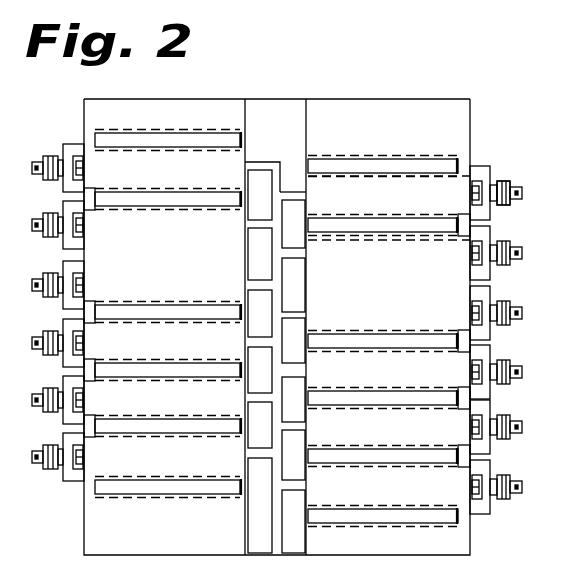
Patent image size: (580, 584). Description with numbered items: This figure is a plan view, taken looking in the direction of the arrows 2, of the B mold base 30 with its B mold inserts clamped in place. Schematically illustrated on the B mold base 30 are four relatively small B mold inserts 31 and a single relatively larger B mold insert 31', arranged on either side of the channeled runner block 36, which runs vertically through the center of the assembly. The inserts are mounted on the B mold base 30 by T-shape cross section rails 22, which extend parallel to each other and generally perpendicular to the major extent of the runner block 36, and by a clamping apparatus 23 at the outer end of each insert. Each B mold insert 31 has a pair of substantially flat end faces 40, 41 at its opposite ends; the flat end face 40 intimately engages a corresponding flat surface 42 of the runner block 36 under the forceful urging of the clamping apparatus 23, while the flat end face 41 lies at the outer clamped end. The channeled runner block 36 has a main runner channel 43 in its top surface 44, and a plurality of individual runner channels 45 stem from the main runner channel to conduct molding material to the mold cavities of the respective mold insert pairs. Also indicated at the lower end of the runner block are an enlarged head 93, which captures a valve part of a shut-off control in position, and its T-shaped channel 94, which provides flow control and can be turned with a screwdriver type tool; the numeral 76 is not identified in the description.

The B mold base plan view 2 is at (331, 327).
The B mold base 30 is at (440, 108).
The channeled runner block 36 is at (278, 108).
The main runner channel 43 is at (288, 166).
The flat end face 40 is at (300, 174).
The top surface 44 is at (258, 110).
The individual runner channels 45 is at (257, 224).
The flat surface 42 is at (308, 110).
The T-shaped channel 94 is at (297, 537).
The bottom tube 76 is at (168, 531).
The rails 22 is at (392, 158).
The enlarged head 93 is at (383, 545).
The B mold inserts 31 is at (410, 155).
The larger B mold insert 31' is at (430, 238).
The clamping apparatus 23 is at (501, 169).
The flat end face 41 is at (495, 188).